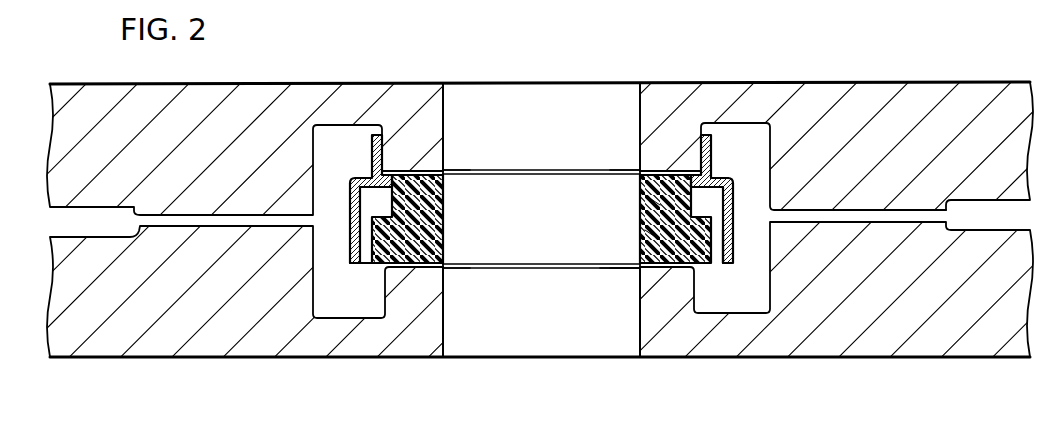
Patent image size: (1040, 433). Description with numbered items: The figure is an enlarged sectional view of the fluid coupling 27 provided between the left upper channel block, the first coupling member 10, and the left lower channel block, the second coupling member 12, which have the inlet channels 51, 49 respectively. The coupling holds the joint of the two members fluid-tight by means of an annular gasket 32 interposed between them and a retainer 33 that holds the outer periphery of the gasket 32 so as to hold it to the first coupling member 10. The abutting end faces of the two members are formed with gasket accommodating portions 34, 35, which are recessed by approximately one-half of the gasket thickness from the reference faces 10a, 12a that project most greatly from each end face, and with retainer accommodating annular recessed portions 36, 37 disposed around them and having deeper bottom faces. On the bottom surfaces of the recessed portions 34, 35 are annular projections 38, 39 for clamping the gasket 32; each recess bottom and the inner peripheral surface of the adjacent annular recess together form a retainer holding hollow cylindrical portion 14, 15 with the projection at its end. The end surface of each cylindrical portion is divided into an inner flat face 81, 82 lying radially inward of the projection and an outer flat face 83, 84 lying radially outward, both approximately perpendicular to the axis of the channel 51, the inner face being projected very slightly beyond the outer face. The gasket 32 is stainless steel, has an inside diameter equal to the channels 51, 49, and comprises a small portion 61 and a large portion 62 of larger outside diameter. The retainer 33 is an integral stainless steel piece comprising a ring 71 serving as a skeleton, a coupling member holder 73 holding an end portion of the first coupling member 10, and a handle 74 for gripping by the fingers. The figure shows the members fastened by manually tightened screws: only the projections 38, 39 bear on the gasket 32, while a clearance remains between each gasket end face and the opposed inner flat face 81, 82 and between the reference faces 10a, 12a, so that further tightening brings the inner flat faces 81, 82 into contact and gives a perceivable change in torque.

The first coupling member 10 is at (998, 147).
The reference face 10a is at (912, 209).
The second coupling member 12 is at (990, 287).
The reference face 12a is at (822, 223).
The retainer holding hollow cylindrical portion 14 is at (383, 166).
The retainer holding hollow cylindrical portion 15 is at (393, 290).
The fluid coupling 27 is at (630, 280).
The gasket 32 is at (660, 173).
The retainer 33 is at (708, 147).
The gasket accommodating portion 34 is at (444, 171).
The gasket accommodating portion 35 is at (444, 268).
The retainer accommodating annular recessed portion 36 is at (327, 125).
The retainer accommodating annular recessed portion 37 is at (322, 320).
The annular projection 38 is at (410, 173).
The annular projection 39 is at (412, 272).
The inlet channel 49 is at (640, 332).
The inlet channel 51 is at (640, 120).
The small portion 61 is at (418, 174).
The large portion 62 is at (382, 265).
The ring 71 is at (722, 184).
The coupling member holder 73 is at (695, 166).
The handle 74 is at (730, 243).
The inner flat face 81 is at (640, 169).
The inner flat face 82 is at (640, 266).
The outer flat face 83 is at (653, 200).
The outer flat face 84 is at (653, 236).